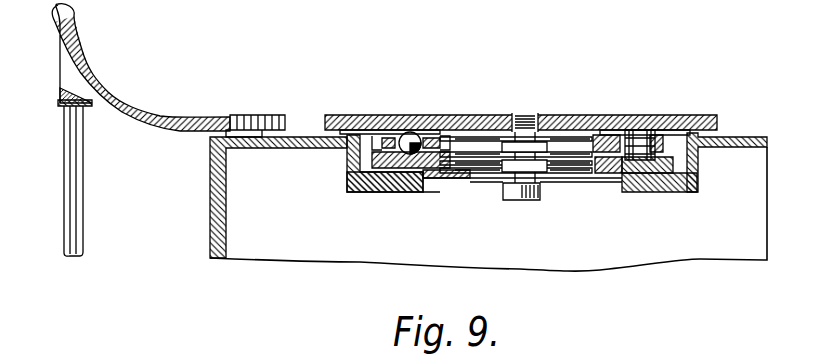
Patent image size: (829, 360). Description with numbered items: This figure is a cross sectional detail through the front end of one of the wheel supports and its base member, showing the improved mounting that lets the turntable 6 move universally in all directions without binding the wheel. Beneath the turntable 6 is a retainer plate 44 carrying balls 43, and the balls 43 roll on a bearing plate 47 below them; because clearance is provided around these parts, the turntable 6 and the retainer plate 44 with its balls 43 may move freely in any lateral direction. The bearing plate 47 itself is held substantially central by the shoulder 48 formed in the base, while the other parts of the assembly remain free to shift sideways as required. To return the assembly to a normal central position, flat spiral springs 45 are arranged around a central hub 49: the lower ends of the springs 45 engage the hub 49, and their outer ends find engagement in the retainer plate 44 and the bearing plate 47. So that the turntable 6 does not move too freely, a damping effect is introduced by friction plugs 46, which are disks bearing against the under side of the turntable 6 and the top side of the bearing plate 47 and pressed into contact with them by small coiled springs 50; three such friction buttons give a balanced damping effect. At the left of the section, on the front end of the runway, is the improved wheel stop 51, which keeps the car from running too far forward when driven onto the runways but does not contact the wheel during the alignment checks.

The turntable 6 is at (556, 118).
The balls 43 is at (404, 133).
The retainer plate 44 is at (447, 136).
The flat spiral springs 45 is at (481, 158).
The friction plugs 46 is at (634, 128).
The bearing plate 47 is at (443, 192).
The shoulder 48 is at (408, 190).
The hub 49 is at (503, 183).
The small coiled springs 50 is at (650, 131).
The wheel stop 51 is at (124, 90).